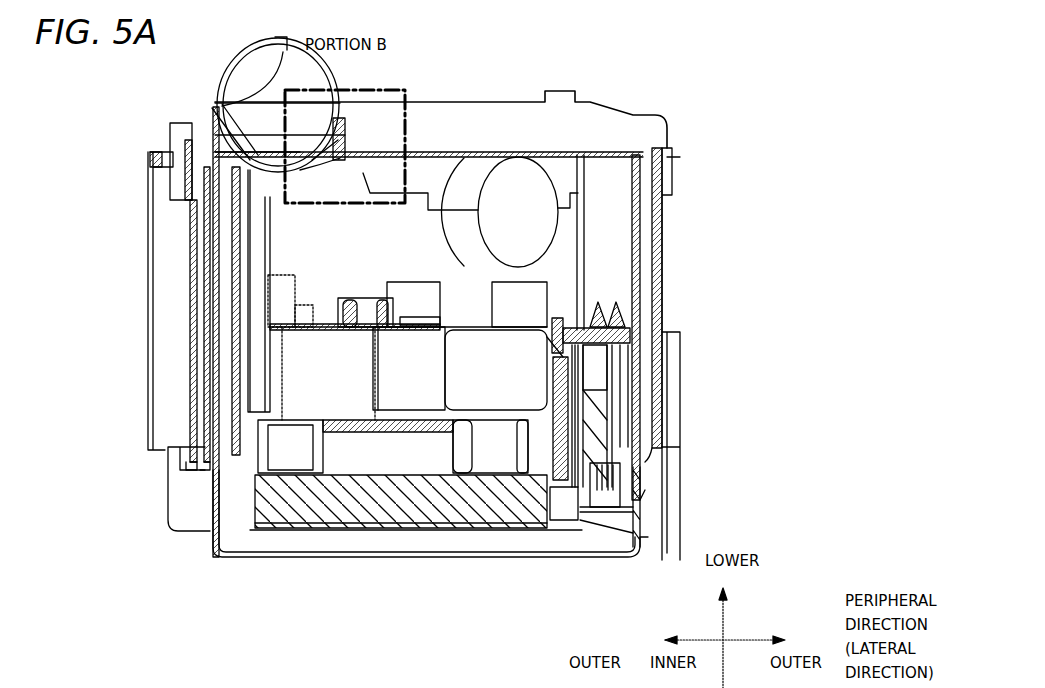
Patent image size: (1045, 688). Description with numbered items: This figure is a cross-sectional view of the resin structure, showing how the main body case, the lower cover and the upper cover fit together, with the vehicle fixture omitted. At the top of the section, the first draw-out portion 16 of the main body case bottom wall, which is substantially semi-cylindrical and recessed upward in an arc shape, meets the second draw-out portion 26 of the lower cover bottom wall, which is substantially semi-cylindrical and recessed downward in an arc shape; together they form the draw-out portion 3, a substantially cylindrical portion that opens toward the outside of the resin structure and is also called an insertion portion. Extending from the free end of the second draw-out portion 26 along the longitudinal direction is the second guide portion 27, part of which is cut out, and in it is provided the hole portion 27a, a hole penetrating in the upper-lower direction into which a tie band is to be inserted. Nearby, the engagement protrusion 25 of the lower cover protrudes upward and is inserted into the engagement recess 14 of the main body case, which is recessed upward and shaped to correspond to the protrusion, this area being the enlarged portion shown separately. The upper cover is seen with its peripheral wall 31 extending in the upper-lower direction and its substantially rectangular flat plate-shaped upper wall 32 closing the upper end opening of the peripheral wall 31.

The draw-out portion 3 is at (206, 155).
The engagement recess 14 is at (403, 163).
The first draw-out portion 16 is at (250, 168).
The engagement protrusion 25 is at (352, 173).
The second draw-out portion 26 is at (255, 103).
The second guide portion 27 is at (228, 75).
The hole portion 27a is at (213, 105).
The peripheral wall 31 is at (640, 540).
The upper wall 32 is at (604, 557).